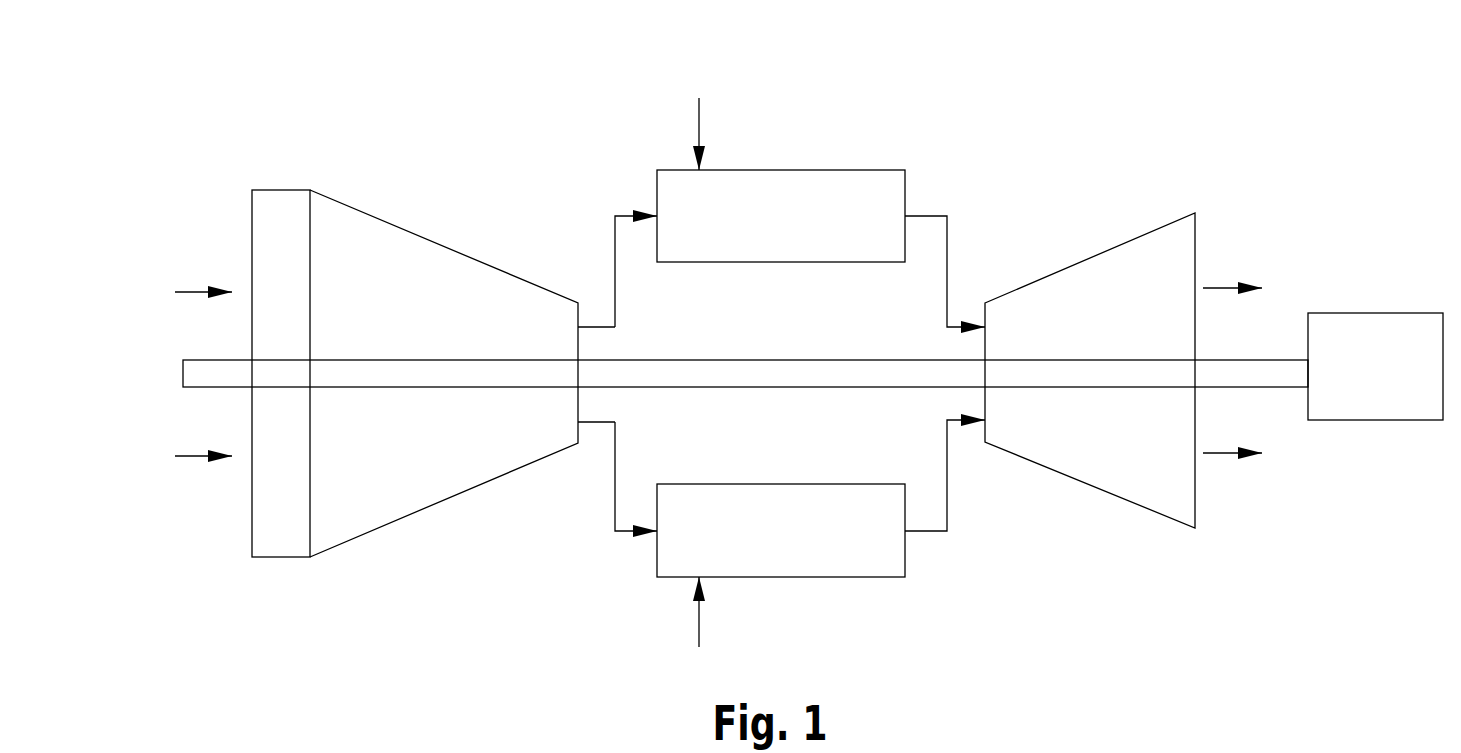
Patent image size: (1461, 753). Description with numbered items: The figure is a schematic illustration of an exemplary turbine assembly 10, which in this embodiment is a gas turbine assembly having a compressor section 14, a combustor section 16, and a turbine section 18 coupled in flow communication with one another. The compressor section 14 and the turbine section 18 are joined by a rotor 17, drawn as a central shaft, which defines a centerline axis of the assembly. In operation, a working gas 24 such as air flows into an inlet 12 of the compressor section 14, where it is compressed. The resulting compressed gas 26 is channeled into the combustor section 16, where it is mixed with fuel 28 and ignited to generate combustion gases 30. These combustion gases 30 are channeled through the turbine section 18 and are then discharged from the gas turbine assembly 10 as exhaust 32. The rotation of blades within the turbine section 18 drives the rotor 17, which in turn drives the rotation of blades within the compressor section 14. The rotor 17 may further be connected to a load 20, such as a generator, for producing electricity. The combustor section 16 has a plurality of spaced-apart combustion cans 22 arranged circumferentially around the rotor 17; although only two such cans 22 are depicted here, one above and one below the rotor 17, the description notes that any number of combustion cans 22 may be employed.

The turbine assembly 10 is at (310, 122).
The inlet 12 is at (282, 190).
The compressor section 14 is at (400, 230).
The combustor section 16 is at (610, 578).
The rotor 17 is at (672, 360).
The turbine section 18 is at (1095, 255).
The load 20 is at (1375, 313).
The combustion cans 22 is at (808, 170).
The working gas 24 is at (200, 290).
The compressed gas 26 is at (612, 260).
The fuel 28 is at (699, 120).
The combustion gases 30 is at (947, 270).
The exhaust 32 is at (1215, 283).